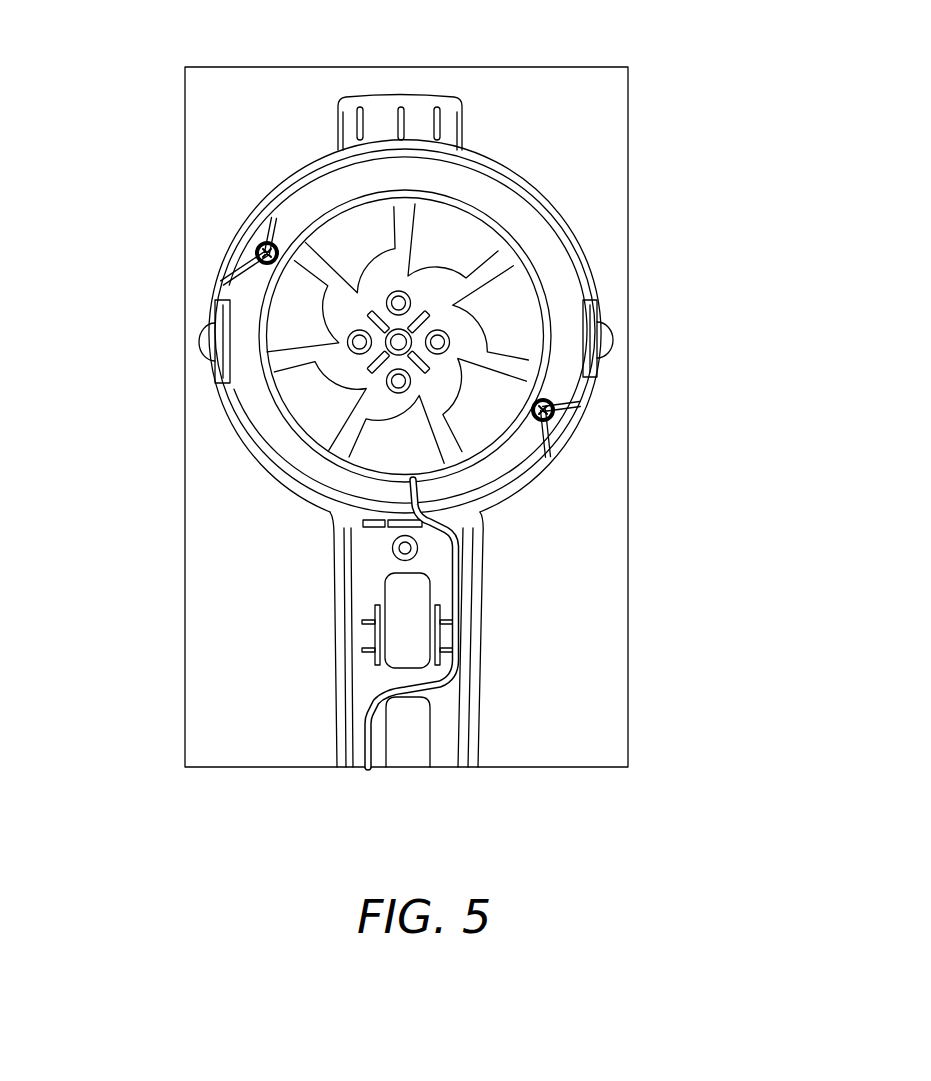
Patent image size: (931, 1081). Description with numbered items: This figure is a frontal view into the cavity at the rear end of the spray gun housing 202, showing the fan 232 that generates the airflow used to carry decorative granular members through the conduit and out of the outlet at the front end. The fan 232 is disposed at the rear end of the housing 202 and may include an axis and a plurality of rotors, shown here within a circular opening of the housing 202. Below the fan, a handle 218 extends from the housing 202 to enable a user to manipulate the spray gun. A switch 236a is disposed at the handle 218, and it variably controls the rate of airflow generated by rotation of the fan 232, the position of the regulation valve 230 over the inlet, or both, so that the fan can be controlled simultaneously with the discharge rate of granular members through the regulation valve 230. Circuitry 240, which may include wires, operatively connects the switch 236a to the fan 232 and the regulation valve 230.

The regulation valve 230 is at (467, 126).
The housing 202 is at (226, 250).
The fan 232 is at (478, 244).
The circuitry 240 is at (459, 599).
The switch 236a is at (412, 753).
The handle 218 is at (472, 707).